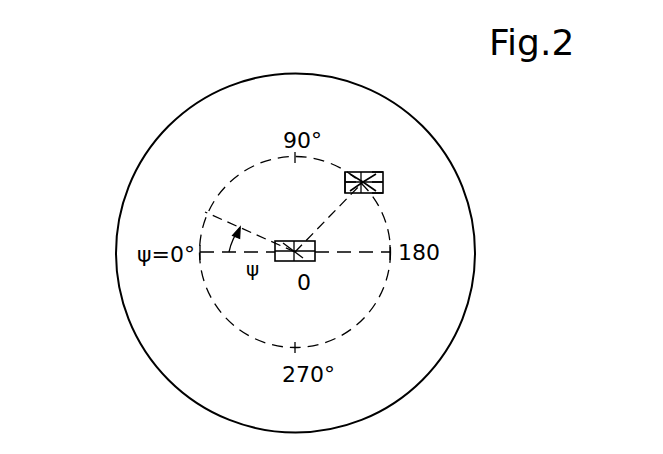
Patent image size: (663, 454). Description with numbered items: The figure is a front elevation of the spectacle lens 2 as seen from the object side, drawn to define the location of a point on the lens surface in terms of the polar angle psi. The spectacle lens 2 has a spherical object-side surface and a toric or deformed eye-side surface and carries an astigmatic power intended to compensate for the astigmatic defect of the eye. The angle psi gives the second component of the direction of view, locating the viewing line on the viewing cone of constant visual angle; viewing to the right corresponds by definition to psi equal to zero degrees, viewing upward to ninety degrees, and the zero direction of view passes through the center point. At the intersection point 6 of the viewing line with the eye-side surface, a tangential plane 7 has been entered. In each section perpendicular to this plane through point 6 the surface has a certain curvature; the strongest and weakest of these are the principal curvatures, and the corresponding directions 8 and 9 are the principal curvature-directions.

The spectacle lens 2 is at (452, 163).
The intersection point 6 is at (345, 184).
The tangential plane 7 is at (384, 171).
The principal curvature-direction 8 is at (367, 172).
The principal curvature-direction 9 is at (383, 185).